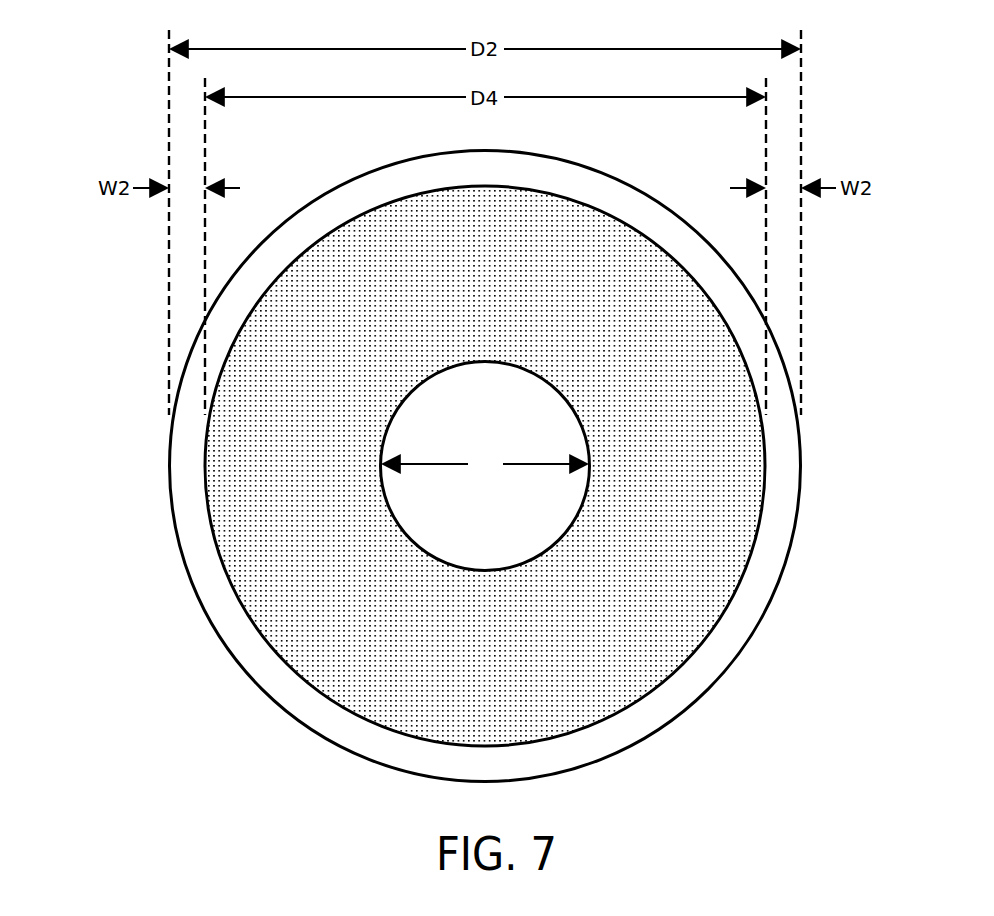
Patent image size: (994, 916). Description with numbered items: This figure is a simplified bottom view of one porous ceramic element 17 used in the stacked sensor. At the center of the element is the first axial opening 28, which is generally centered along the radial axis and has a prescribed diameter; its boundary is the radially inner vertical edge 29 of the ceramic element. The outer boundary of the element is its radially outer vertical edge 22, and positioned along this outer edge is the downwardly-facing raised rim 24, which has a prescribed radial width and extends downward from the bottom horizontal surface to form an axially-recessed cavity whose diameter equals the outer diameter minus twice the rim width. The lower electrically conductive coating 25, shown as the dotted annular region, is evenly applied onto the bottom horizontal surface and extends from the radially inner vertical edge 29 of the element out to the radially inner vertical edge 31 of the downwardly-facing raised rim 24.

The porous ceramic element 17 is at (118, 90).
The radially outer vertical edge 22 is at (187, 575).
The downwardly-facing raised rim 24 is at (187, 508).
The lower electrically conductive coating 25 is at (497, 298).
The first axial opening 28 is at (497, 436).
The radially inner vertical edge 29 is at (410, 530).
The radially inner vertical edge of downwardly-facing raised rim 31 is at (287, 660).